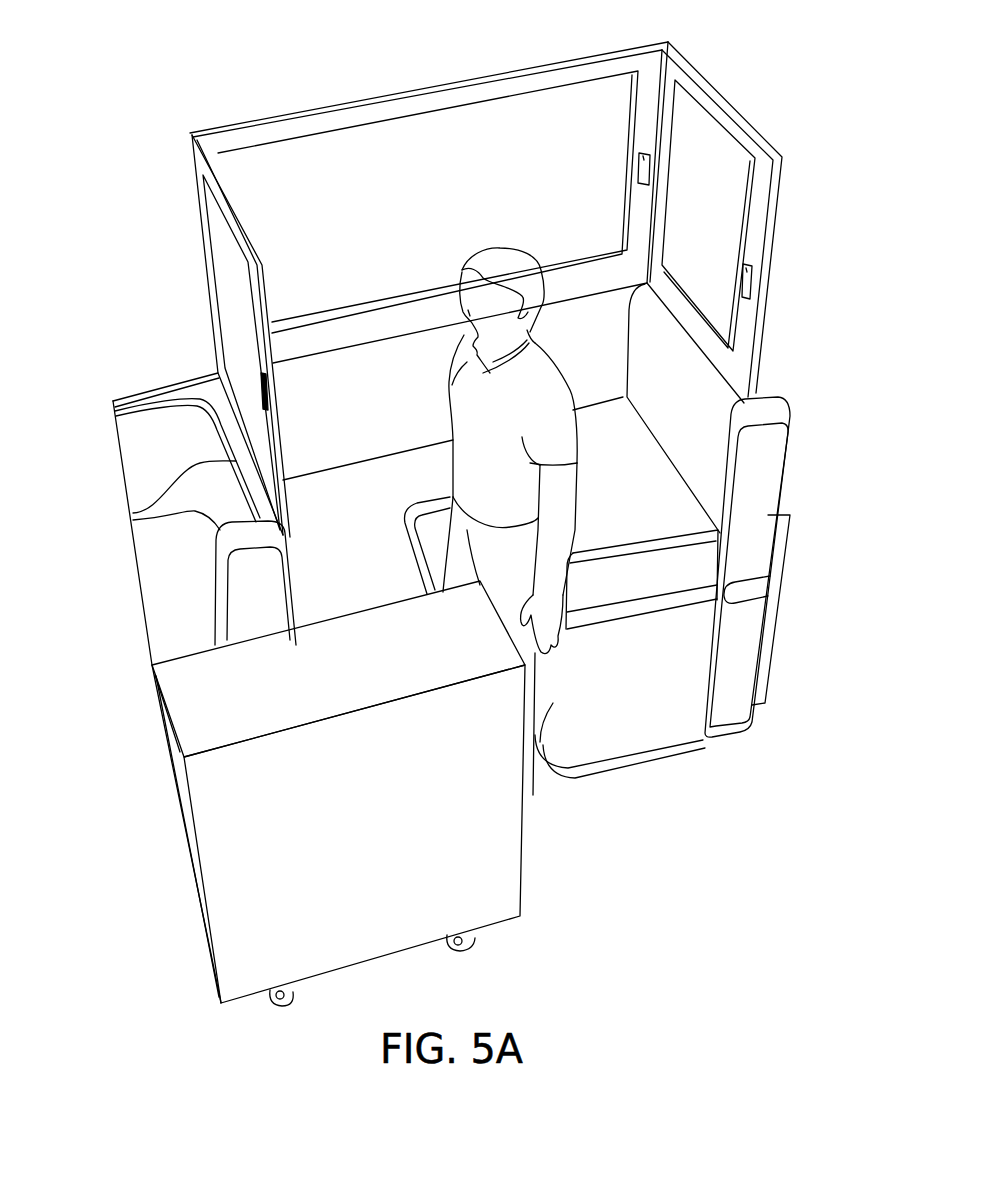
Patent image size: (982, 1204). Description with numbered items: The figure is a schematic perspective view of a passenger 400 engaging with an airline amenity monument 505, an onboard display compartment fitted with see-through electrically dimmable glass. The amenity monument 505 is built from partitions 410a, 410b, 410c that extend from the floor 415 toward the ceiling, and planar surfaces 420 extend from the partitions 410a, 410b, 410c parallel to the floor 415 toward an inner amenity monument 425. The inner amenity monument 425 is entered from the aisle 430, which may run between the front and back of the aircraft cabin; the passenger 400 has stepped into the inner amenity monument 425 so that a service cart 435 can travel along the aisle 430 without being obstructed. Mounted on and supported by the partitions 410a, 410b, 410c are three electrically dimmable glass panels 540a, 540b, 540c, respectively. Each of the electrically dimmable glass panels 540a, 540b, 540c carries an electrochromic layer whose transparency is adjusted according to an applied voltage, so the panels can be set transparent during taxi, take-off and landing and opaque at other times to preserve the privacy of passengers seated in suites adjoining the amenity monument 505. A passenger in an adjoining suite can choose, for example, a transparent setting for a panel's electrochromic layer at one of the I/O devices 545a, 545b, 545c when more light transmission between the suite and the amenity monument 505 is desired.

The amenity monument 505 is at (179, 89).
The passenger 400 is at (510, 257).
The partition 410a is at (133, 513).
The partition 410b is at (327, 372).
The partition 410c is at (702, 390).
The floor 415 is at (719, 733).
The planar surfaces 420 is at (645, 517).
The inner amenity monument 425 is at (560, 768).
The aisle 430 is at (690, 834).
The service cart 435 is at (365, 836).
The electrically dimmable glass panel 540a is at (233, 283).
The electrically dimmable glass panel 540b is at (303, 152).
The electrically dimmable glass panel 540c is at (717, 153).
The I/O device 545a is at (260, 390).
The I/O device 545b is at (648, 158).
The I/O device 545c is at (753, 280).